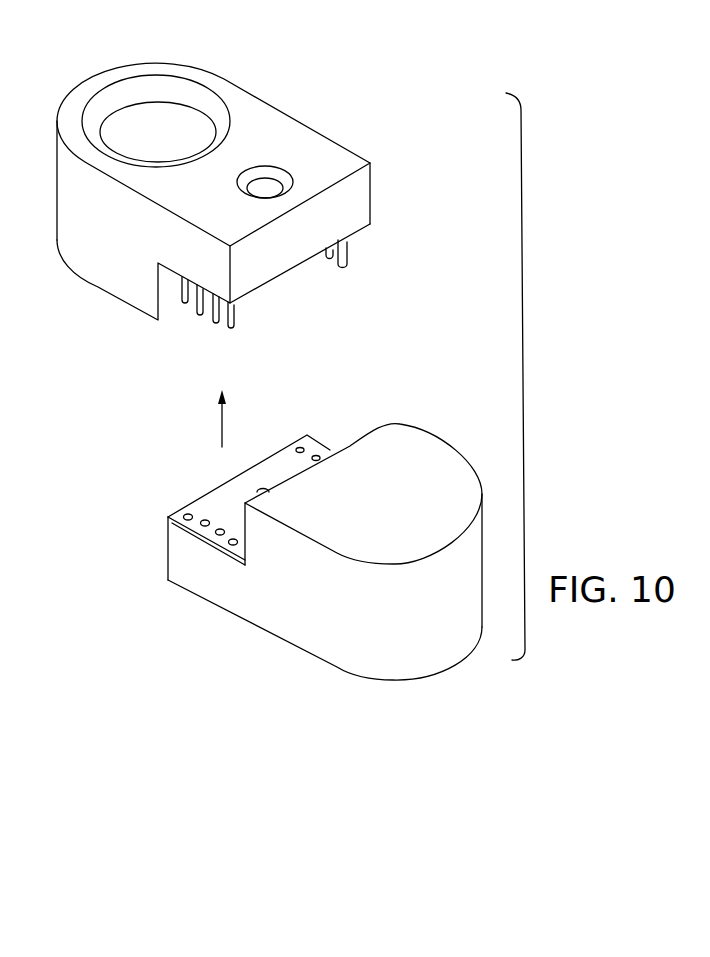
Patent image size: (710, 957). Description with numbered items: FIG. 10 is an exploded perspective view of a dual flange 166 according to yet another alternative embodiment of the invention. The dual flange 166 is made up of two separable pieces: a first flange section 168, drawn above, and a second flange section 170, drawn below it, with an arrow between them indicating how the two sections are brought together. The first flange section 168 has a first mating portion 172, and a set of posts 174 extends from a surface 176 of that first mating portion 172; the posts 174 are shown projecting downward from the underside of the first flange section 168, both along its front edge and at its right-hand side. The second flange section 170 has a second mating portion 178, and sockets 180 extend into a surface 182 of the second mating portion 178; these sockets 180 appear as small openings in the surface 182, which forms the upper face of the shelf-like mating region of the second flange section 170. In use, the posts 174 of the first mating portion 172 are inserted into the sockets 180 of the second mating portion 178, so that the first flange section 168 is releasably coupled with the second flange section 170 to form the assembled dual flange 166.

The dual flange 166 is at (97, 420).
The first flange section 168 is at (243, 95).
The second flange section 170 is at (466, 477).
The first mating portion 172 is at (366, 184).
The posts 174 is at (368, 247).
The surface of first mating portion 176 is at (298, 287).
The second mating portion 178 is at (175, 547).
The sockets 180 is at (336, 437).
The surface of second mating portion 182 is at (212, 497).